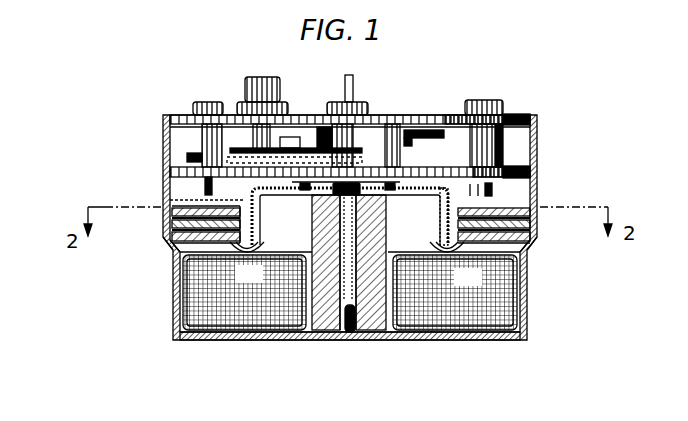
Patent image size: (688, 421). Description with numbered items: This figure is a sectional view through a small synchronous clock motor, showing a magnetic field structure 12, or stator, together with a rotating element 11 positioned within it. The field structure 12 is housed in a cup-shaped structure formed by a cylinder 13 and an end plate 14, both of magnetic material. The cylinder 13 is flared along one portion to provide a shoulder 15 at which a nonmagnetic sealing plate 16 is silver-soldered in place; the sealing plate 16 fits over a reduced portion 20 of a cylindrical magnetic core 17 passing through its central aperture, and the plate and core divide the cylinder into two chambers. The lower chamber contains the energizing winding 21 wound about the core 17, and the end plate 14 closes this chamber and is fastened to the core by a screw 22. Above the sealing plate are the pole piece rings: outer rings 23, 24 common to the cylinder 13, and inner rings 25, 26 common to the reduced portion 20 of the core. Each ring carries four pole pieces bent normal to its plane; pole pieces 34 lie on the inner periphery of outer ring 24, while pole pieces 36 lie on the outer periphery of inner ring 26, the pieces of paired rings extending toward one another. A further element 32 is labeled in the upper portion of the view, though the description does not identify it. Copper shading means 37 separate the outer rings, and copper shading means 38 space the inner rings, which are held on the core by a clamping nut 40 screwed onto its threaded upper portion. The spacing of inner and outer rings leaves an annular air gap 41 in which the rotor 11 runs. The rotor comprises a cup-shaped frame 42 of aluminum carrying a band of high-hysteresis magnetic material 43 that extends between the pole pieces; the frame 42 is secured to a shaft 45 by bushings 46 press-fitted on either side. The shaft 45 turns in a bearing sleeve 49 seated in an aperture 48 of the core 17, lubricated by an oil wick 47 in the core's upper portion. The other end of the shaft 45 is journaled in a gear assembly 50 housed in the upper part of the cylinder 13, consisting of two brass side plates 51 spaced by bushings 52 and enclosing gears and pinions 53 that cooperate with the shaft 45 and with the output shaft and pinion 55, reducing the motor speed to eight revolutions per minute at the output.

The rotating element 11 is at (470, 184).
The magnetic field structure 12 is at (548, 302).
The cylinder 13 is at (528, 332).
The end plate 14 is at (440, 338).
The shoulder 15 is at (532, 242).
The sealing plate 16 is at (528, 258).
The magnetic core 17 is at (320, 332).
The reduced portion 20 is at (318, 230).
The energizing winding 21 is at (253, 312).
The screw 22 is at (355, 333).
The outer pole piece ring 23 is at (167, 243).
The outer pole piece ring 24 is at (200, 210).
The inner pole piece ring 25 is at (252, 197).
The inner pole piece ring 26 is at (318, 255).
The upper circuit board 32 is at (411, 115).
The pole pieces 34 is at (535, 213).
The pole pieces 36 is at (227, 202).
The shading means 37 is at (165, 228).
The shading means 38 is at (267, 254).
The clamping nut 40 is at (440, 203).
The annular air gap 41 is at (453, 197).
The cup-shaped frame 42 is at (437, 195).
The band of magnetic material 43 is at (438, 255).
The shaft 45 is at (357, 210).
The bushings 46 is at (340, 183).
The wick 47 is at (368, 175).
The aperture 48 is at (358, 257).
The sleeve 49 is at (337, 332).
The gear assembly 50 is at (397, 81).
The side plates 51 is at (537, 118).
The bushings 52 is at (197, 140).
The gears and pinions 53 is at (428, 140).
The output shaft and pinion 55 is at (280, 93).